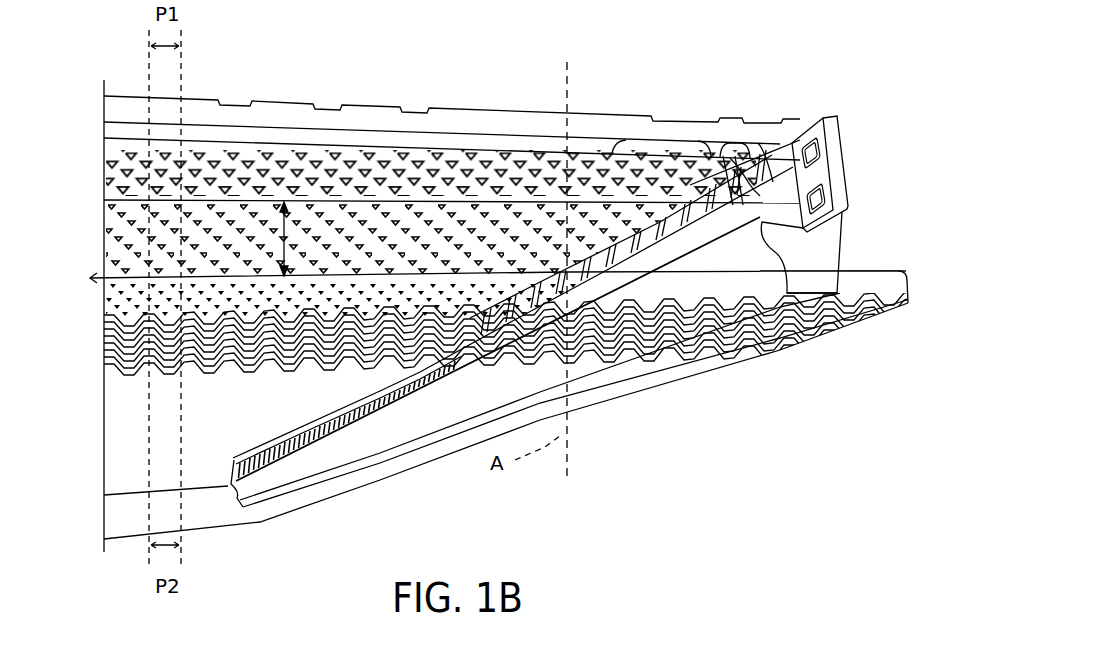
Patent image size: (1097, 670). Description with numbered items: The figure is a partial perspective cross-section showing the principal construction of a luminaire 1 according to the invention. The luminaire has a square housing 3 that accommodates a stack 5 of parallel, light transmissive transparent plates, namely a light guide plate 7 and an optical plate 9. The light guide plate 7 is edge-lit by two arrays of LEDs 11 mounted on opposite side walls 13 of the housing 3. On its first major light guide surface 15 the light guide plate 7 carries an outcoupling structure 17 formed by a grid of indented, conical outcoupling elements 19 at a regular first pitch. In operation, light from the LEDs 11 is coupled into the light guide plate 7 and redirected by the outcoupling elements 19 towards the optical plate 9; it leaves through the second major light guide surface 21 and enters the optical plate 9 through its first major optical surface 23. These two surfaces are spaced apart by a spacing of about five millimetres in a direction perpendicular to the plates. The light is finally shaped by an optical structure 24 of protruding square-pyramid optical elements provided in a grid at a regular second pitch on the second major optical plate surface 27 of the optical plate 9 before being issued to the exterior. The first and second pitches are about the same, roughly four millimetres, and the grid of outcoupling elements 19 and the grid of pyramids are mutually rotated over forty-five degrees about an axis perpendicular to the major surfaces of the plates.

The luminaire 1 is at (853, 67).
The housing 3 is at (270, 115).
The stack 5 is at (95, 122).
The light guide plate 7 is at (675, 167).
The optical plate 9 is at (907, 282).
The LEDs 11 is at (388, 415).
The side walls 13 is at (833, 232).
The first major light guide surface 15 is at (632, 158).
The outcoupling structure 17 is at (498, 152).
The outcoupling elements 19 is at (345, 299).
The second major light guide surface 21 is at (325, 200).
The first major optical surface 23 is at (890, 280).
The optical structure 24 is at (750, 355).
The second major optical plate surface 27 is at (104, 345).